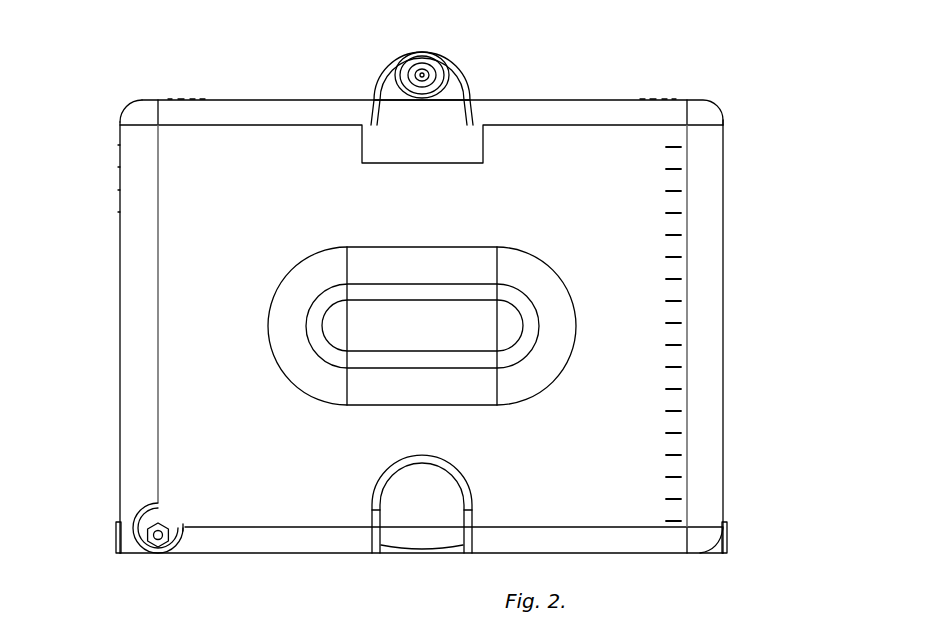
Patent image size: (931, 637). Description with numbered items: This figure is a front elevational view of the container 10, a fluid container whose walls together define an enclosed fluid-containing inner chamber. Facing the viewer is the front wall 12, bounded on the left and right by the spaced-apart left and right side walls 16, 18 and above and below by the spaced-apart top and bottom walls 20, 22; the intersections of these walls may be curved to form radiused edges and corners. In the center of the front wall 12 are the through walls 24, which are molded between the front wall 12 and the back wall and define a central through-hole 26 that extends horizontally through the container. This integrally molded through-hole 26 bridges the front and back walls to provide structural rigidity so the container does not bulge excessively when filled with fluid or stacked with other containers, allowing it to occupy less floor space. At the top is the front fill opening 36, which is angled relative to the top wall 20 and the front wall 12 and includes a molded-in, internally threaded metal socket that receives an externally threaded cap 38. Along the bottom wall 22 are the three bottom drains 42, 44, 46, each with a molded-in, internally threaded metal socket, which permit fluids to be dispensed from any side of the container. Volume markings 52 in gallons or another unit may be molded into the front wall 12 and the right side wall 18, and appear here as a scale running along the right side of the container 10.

The container 10 is at (418, 321).
The front wall 12 is at (188, 362).
The left side wall 16 is at (120, 419).
The right side wall 18 is at (723, 374).
The top wall 20 is at (538, 100).
The bottom wall 22 is at (263, 553).
The through walls 24 is at (363, 358).
The central through-hole 26 is at (473, 326).
The front fill opening 36 is at (393, 74).
The cap 38 is at (424, 74).
The bottom drain 42 is at (118, 532).
The bottom drain 44 is at (157, 537).
The bottom drain 46 is at (727, 533).
The volume markings 52 is at (675, 322).